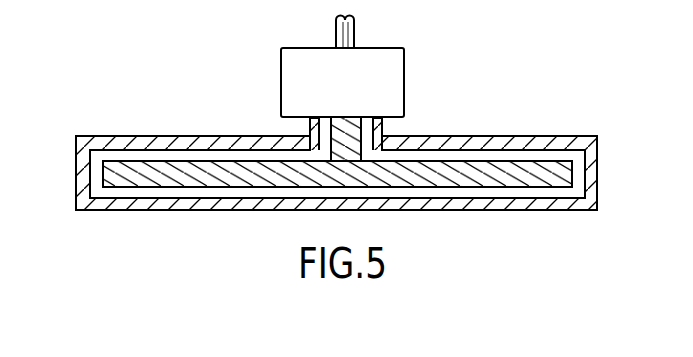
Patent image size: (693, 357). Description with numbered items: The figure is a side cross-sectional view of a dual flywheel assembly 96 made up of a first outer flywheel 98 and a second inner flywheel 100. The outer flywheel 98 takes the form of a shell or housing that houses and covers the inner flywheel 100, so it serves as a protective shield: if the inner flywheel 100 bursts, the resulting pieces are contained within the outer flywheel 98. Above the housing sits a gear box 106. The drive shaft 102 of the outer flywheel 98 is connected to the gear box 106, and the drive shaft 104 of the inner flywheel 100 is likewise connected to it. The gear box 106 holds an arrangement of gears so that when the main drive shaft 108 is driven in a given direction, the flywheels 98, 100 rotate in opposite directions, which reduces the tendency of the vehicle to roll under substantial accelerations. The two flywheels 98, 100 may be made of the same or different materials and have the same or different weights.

The dual flywheel assembly 96 is at (348, 140).
The first outer flywheel 98 is at (515, 138).
The second inner flywheel 100 is at (548, 166).
The drive shaft of the outer flywheel 102 is at (305, 122).
The drive shaft of the inner flywheel 104 is at (356, 130).
The gear box 106 is at (405, 70).
The main drive shaft 108 is at (356, 34).